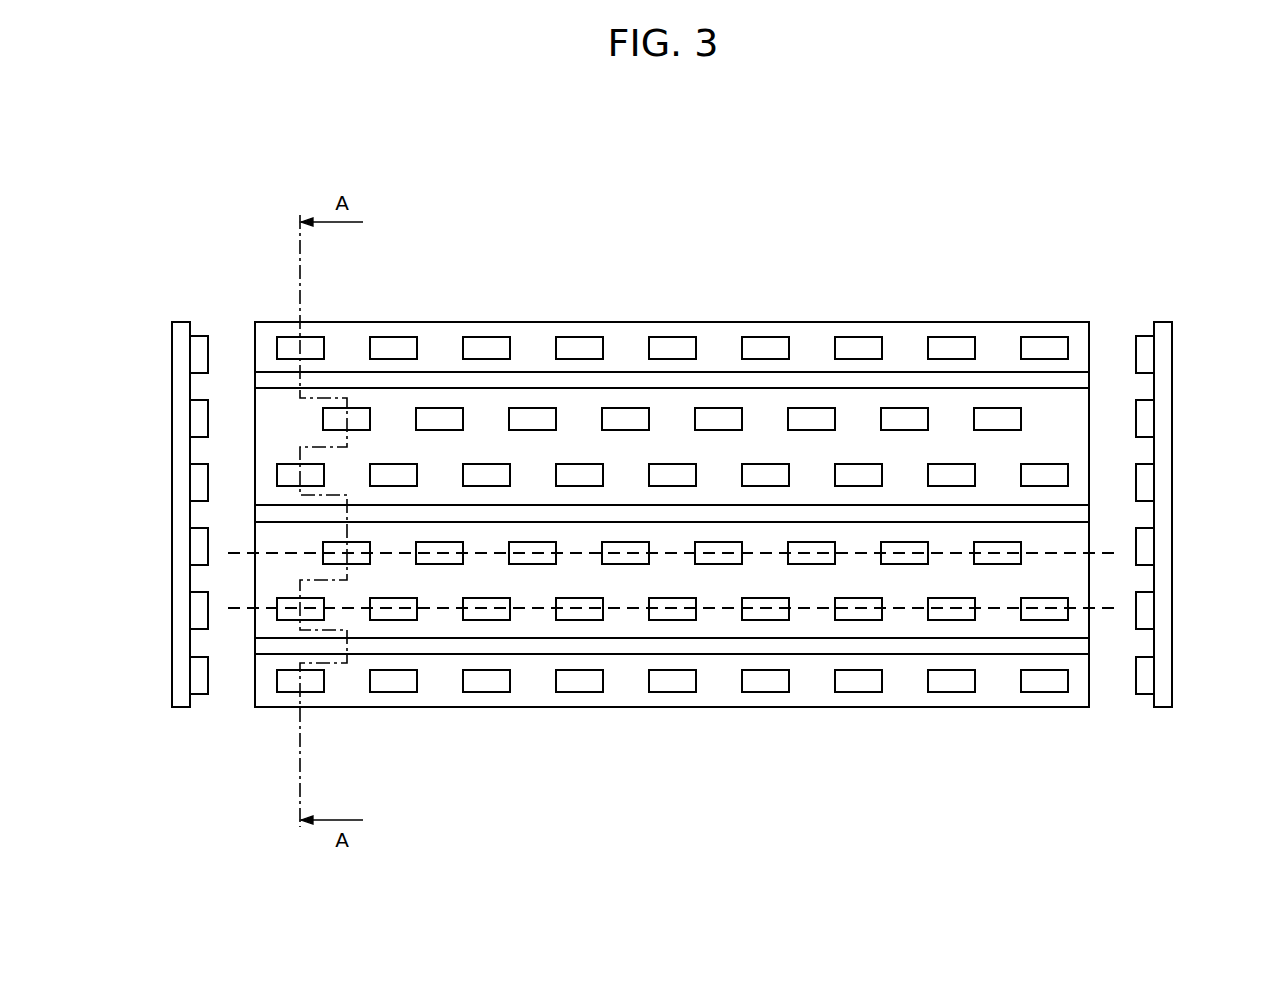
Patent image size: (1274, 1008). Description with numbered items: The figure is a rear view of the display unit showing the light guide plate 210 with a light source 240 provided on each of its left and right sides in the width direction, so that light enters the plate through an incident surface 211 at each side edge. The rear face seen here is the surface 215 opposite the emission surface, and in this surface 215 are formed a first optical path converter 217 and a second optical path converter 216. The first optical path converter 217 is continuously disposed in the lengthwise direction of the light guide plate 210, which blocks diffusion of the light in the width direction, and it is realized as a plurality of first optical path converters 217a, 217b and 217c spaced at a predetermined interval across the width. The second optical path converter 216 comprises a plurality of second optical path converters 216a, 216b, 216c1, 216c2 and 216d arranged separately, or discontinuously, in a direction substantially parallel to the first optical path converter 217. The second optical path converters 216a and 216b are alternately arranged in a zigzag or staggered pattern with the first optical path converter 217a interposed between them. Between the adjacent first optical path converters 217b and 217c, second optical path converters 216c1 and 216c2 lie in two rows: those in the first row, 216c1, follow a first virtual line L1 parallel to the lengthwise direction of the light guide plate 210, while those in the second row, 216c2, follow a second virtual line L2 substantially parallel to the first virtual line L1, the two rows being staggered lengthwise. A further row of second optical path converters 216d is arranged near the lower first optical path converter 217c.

The light guide plate 210 is at (1003, 308).
The incident surface 211 is at (255, 677).
The opposite surface 215 is at (343, 685).
The second optical path converter 216 is at (672, 449).
The second optical path converter 216a is at (388, 337).
The second optical path converter 216b is at (483, 468).
The second optical path converter in the first row 216c1 is at (546, 548).
The second optical path converter in the second row 216c2 is at (655, 598).
The second optical path converter 216d is at (770, 677).
The first optical path converter 217 is at (672, 596).
The first optical path converter 217a is at (853, 383).
The first optical path converter 217b is at (605, 515).
The first optical path converter 217c is at (850, 777).
The light source 240 is at (175, 347).
The first virtual line L1 is at (1069, 553).
The second virtual line L2 is at (985, 608).